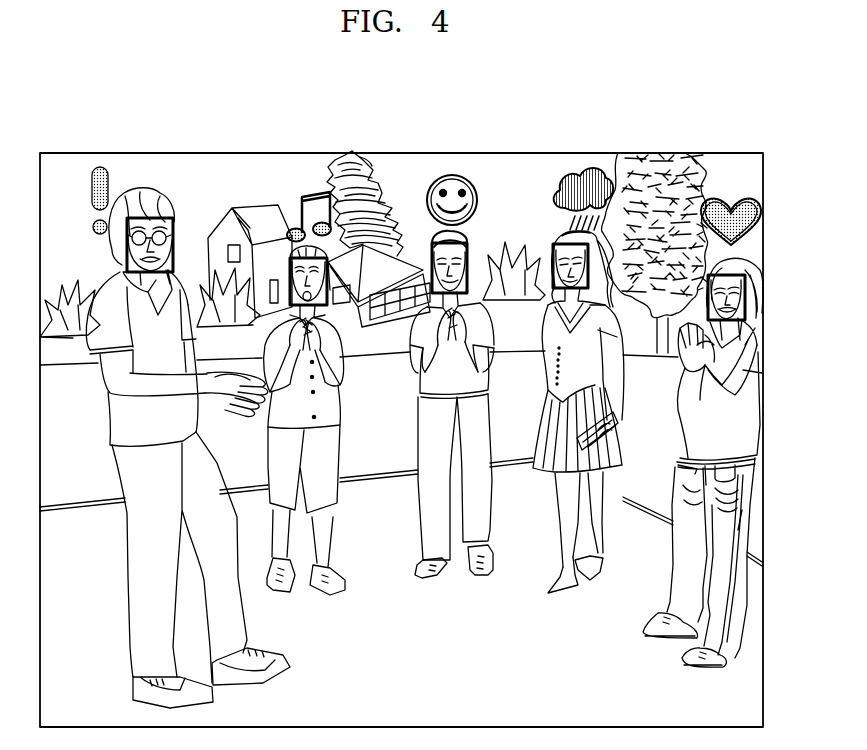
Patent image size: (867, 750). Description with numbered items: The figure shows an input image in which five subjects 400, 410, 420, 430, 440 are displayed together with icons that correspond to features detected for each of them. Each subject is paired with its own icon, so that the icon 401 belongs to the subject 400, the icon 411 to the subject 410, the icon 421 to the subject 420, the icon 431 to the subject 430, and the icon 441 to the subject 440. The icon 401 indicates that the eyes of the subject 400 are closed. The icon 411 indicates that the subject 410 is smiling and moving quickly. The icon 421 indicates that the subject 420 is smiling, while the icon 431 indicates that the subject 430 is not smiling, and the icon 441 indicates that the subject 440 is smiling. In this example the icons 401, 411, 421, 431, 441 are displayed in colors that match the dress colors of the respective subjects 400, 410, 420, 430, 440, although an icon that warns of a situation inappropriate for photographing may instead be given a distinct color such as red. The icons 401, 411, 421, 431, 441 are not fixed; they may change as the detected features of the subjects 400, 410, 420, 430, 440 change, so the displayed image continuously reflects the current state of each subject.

The subject 400 is at (163, 210).
The icon 401 is at (105, 167).
The subject 410 is at (343, 320).
The icon 411 is at (312, 190).
The subject 420 is at (480, 297).
The icon 421 is at (462, 177).
The subject 430 is at (604, 243).
The icon 431 is at (584, 167).
The subject 440 is at (755, 268).
The icon 441 is at (735, 197).